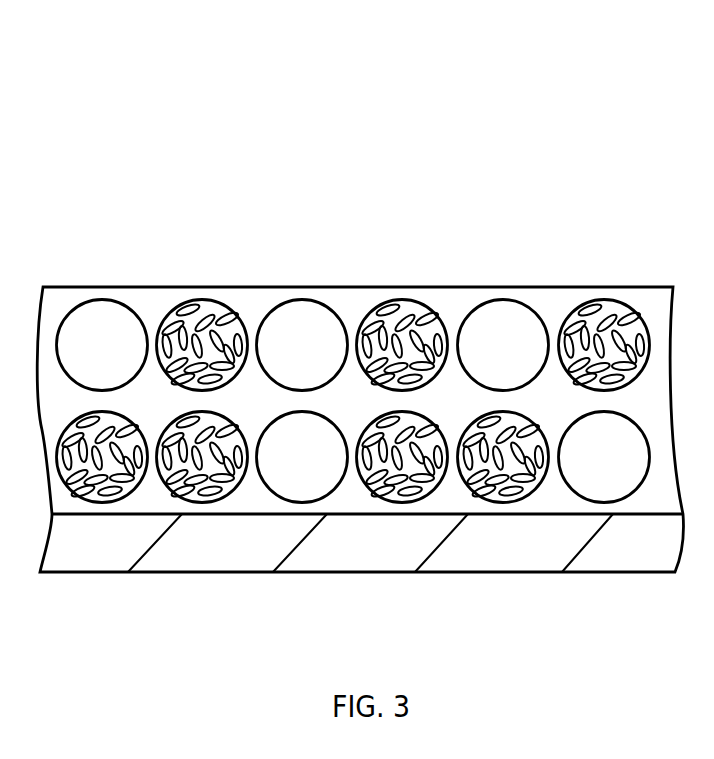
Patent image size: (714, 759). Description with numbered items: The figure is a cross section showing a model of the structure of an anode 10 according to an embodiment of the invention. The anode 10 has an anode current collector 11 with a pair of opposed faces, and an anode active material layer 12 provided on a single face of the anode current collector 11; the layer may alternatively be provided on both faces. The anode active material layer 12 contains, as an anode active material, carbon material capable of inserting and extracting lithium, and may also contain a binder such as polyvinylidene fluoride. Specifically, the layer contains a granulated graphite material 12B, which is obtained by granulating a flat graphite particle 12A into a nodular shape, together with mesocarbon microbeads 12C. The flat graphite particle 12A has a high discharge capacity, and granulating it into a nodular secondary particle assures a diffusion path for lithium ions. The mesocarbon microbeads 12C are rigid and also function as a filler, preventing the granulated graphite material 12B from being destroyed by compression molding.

The anode 10 is at (360, 332).
The anode current collector 11 is at (384, 572).
The anode active material layer 12 is at (360, 368).
The flat graphite particle 12A is at (214, 278).
The granulated graphite material 12B is at (243, 313).
The mesocarbon microbeads 12C is at (505, 298).